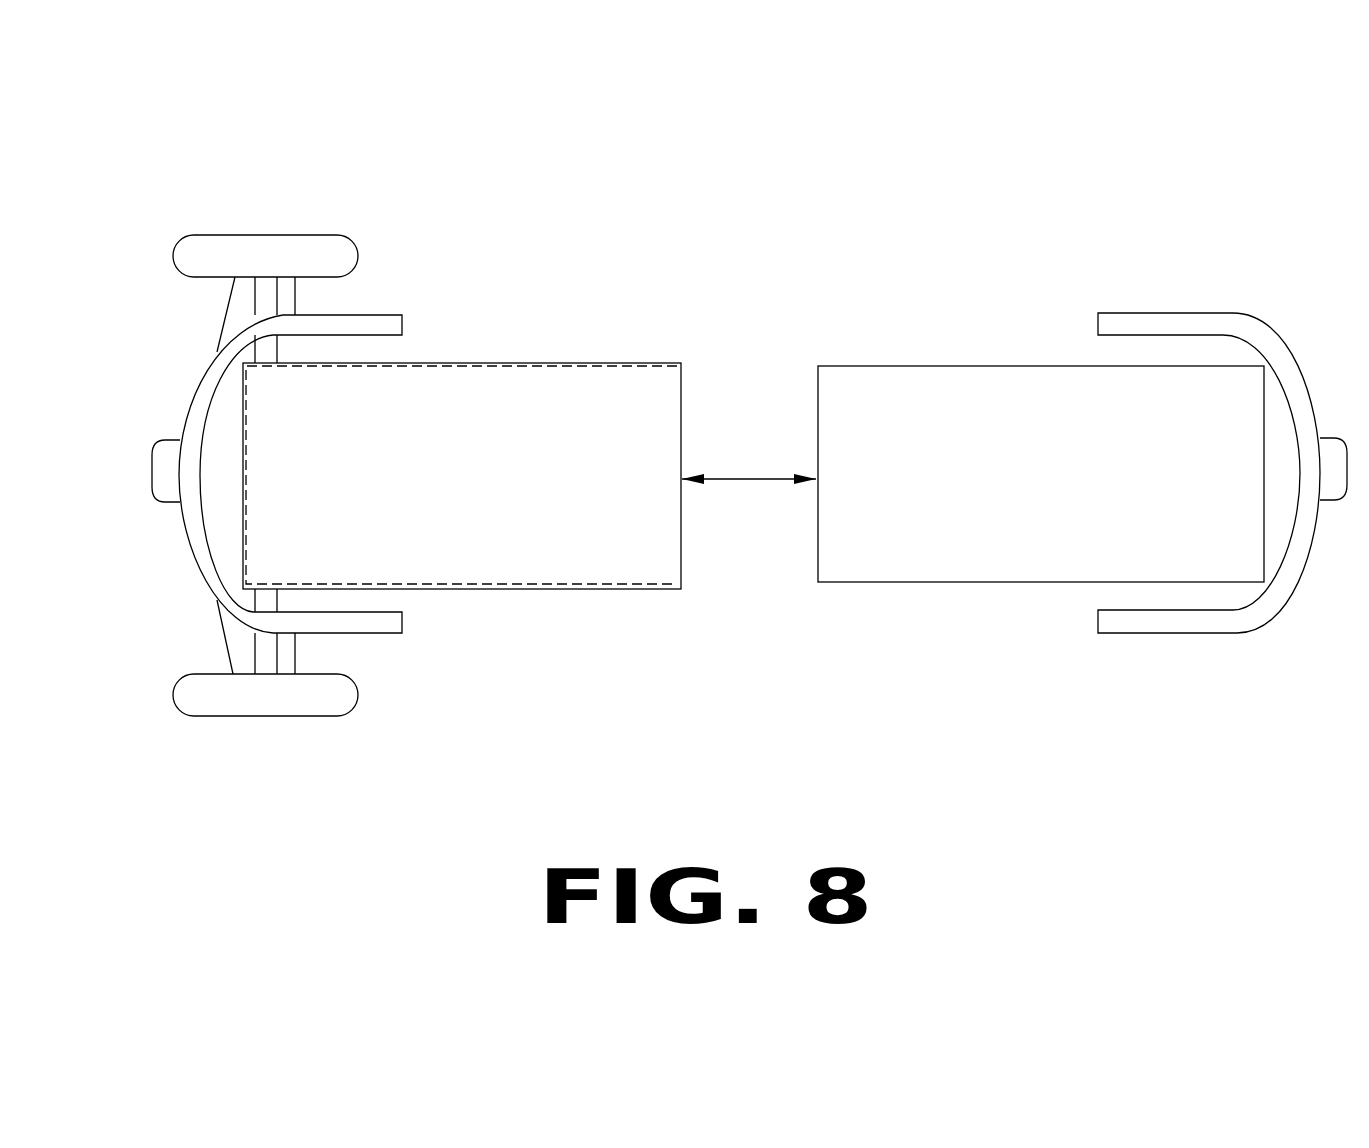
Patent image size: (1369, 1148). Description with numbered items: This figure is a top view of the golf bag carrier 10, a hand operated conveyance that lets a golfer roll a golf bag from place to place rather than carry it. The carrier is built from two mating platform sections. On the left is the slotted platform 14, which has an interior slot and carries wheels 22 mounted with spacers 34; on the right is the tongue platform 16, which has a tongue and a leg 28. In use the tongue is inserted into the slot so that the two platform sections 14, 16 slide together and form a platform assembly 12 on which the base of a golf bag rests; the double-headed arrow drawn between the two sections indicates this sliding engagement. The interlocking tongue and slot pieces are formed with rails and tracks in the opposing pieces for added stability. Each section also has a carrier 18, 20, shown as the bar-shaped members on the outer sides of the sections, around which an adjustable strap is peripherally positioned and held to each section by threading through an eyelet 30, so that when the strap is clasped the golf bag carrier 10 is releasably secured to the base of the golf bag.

The golf bag carrier 10 is at (1262, 202).
The platform assembly 12 is at (875, 258).
The slotted platform 14 is at (682, 540).
The tongue platform 16 is at (818, 418).
The carrier 18 is at (377, 635).
The carrier 20 is at (1137, 617).
The wheels 22 is at (330, 268).
The leg 28 is at (1118, 317).
The eyelet 30 is at (160, 457).
The spacers 34 is at (243, 315).